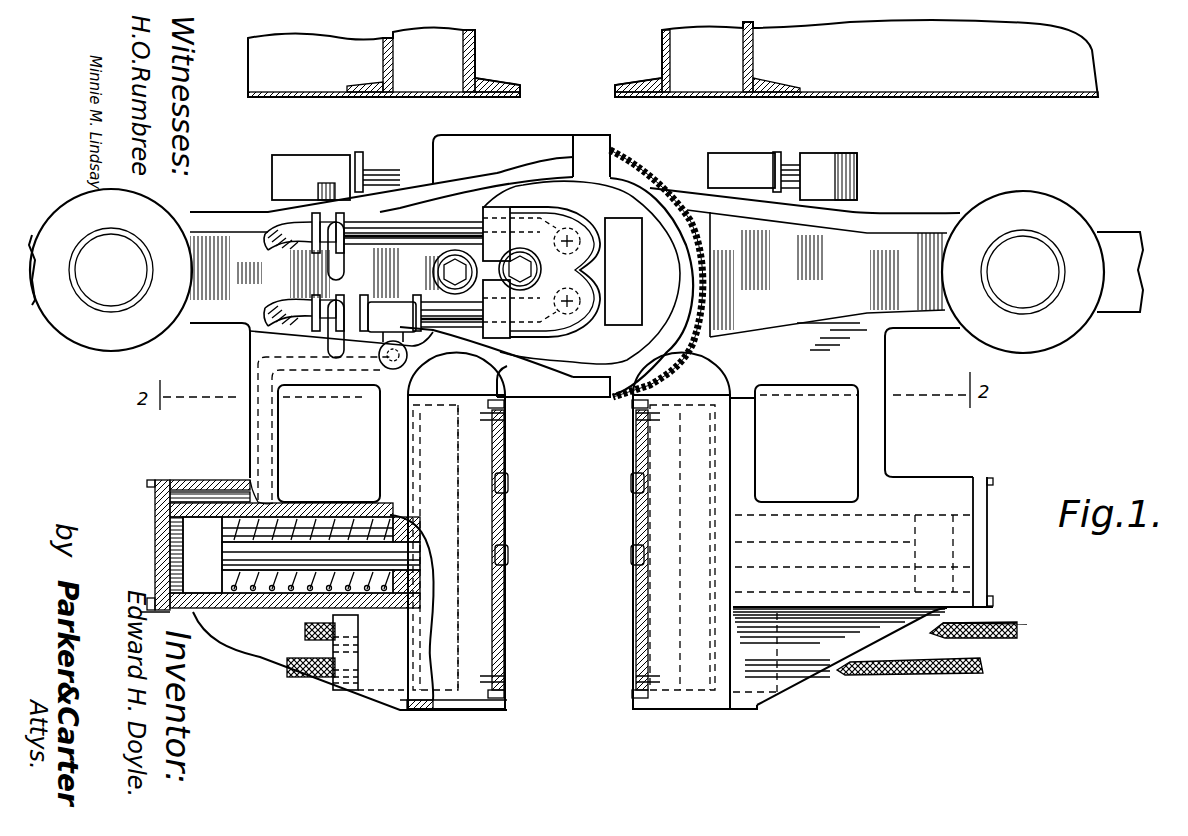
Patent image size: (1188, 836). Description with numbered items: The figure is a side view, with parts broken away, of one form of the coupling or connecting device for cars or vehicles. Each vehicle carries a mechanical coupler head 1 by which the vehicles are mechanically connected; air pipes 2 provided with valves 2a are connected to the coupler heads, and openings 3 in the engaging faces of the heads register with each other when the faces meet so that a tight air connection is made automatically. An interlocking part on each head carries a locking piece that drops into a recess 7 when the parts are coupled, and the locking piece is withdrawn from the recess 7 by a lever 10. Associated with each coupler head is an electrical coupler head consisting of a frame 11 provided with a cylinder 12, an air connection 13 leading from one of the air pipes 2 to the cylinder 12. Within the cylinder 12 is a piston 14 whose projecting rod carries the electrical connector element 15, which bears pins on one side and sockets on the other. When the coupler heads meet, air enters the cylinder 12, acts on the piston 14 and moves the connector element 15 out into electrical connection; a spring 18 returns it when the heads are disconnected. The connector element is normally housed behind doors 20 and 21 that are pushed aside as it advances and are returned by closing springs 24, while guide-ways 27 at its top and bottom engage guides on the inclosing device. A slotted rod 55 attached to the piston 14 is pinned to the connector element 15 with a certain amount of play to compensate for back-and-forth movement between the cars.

The mechanical coupler heads 1 is at (760, 205).
The air pipes 2 is at (424, 288).
The valves 2a is at (327, 293).
The openings 3 is at (612, 301).
The recess 7 is at (643, 270).
The lever 10 is at (737, 160).
The frame 11 is at (884, 357).
The cylinder 12 is at (802, 510).
The air connection 13 is at (262, 455).
The piston 14 is at (1006, 565).
The electrical connector element 15 is at (683, 472).
The spring 18 is at (268, 587).
The door 20 is at (648, 455).
The door 21 is at (508, 462).
The closing springs 24 is at (645, 520).
The guide-ways 27 is at (708, 722).
The rod 55 is at (837, 560).